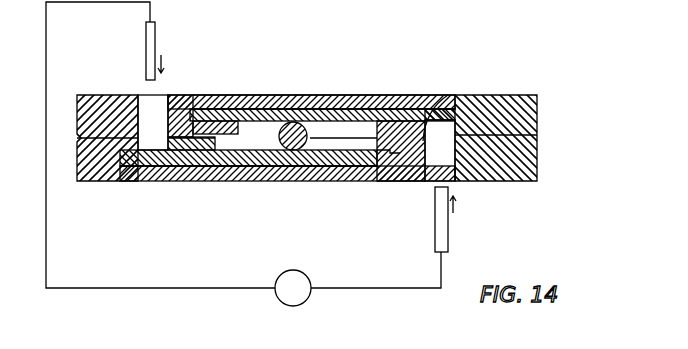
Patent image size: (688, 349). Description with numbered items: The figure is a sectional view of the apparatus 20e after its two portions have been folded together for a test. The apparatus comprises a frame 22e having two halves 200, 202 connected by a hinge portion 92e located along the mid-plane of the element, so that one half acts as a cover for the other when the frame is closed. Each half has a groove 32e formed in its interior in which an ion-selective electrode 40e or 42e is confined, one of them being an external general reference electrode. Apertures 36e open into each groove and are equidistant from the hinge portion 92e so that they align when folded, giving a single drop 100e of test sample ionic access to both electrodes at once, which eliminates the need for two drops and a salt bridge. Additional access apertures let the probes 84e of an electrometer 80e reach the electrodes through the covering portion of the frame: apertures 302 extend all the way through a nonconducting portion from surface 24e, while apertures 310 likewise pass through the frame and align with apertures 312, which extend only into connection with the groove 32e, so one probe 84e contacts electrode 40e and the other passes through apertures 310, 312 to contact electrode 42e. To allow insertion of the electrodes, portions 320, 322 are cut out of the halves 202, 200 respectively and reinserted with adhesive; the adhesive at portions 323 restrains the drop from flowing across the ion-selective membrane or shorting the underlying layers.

The apparatus 20e is at (379, 46).
The frame 22e is at (105, 188).
The surface 24e is at (262, 188).
The groove 32e is at (210, 96).
The apertures 36e is at (247, 95).
The ISE 40e is at (385, 96).
The ISE 42e is at (302, 182).
The electrometer 80e is at (306, 299).
The probes 84e is at (156, 36).
The hinge portion 92e is at (78, 140).
The drop 100e is at (314, 96).
The half 200 is at (520, 188).
The half 202 is at (506, 90).
The apertures 302 is at (432, 182).
The apertures 310 is at (141, 112).
The apertures 312 is at (165, 182).
The portion 320 is at (293, 96).
The portion 322 is at (352, 182).
The portions 323 is at (215, 135).